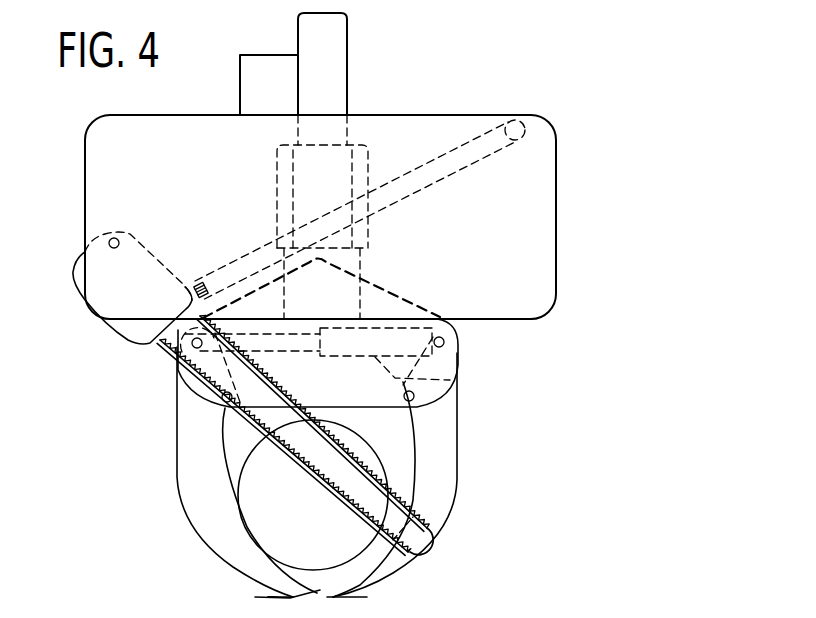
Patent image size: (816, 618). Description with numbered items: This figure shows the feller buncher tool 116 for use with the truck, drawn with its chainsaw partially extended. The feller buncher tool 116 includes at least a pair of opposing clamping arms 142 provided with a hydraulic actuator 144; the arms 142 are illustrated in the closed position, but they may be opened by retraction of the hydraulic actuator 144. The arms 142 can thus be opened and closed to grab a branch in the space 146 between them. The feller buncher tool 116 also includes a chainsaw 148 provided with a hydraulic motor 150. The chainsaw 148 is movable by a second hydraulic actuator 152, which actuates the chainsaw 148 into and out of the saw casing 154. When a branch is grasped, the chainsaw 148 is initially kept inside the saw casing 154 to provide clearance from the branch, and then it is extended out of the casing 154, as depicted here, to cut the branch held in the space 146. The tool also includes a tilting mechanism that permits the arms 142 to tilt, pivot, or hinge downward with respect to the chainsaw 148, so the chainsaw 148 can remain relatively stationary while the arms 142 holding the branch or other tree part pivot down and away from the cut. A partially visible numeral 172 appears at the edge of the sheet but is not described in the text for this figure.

The feller buncher tool 116 is at (570, 98).
The clamping arms 142 is at (193, 500).
The hydraulic actuator 144 is at (462, 382).
The space 146 is at (324, 531).
The chainsaw 148 is at (393, 553).
The hydraulic motor 150 is at (166, 260).
The hydraulic actuator 152 is at (445, 177).
The saw casing 154 is at (556, 280).
The guide member 172 is at (695, 611).